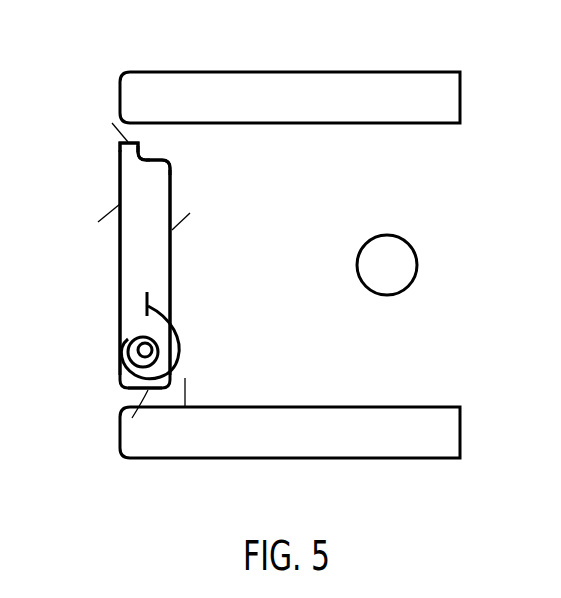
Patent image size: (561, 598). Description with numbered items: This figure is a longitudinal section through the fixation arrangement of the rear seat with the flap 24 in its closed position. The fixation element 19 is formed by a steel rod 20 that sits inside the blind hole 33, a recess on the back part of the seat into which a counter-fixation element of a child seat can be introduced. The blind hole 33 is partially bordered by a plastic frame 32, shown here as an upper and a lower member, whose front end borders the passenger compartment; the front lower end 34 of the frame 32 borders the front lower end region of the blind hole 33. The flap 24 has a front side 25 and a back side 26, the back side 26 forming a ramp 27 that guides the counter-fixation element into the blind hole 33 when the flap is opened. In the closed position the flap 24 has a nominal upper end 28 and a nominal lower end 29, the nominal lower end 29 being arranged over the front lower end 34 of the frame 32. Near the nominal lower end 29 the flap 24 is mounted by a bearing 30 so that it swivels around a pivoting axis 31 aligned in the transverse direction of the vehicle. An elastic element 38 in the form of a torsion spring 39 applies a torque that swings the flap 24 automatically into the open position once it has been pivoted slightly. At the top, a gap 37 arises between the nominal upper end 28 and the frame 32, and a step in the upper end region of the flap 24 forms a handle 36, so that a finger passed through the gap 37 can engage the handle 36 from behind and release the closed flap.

The fixation element 19 is at (435, 265).
The rod 20 is at (410, 263).
The flap 24 is at (140, 268).
The front side 25 is at (120, 203).
The back side 26 is at (219, 272).
The ramp 27 is at (172, 230).
The nominal upper end 28 is at (128, 143).
The nominal lower end 29 is at (148, 390).
The bearing 30 is at (90, 360).
The pivoting axis 31 is at (141, 352).
The frame 32 is at (407, 100).
The blind hole 33 is at (299, 198).
The front lower end 34 is at (186, 407).
The handle 36 is at (141, 155).
The gap 37 is at (150, 135).
The elastic element 38 is at (195, 335).
The torsion spring 39 is at (177, 340).